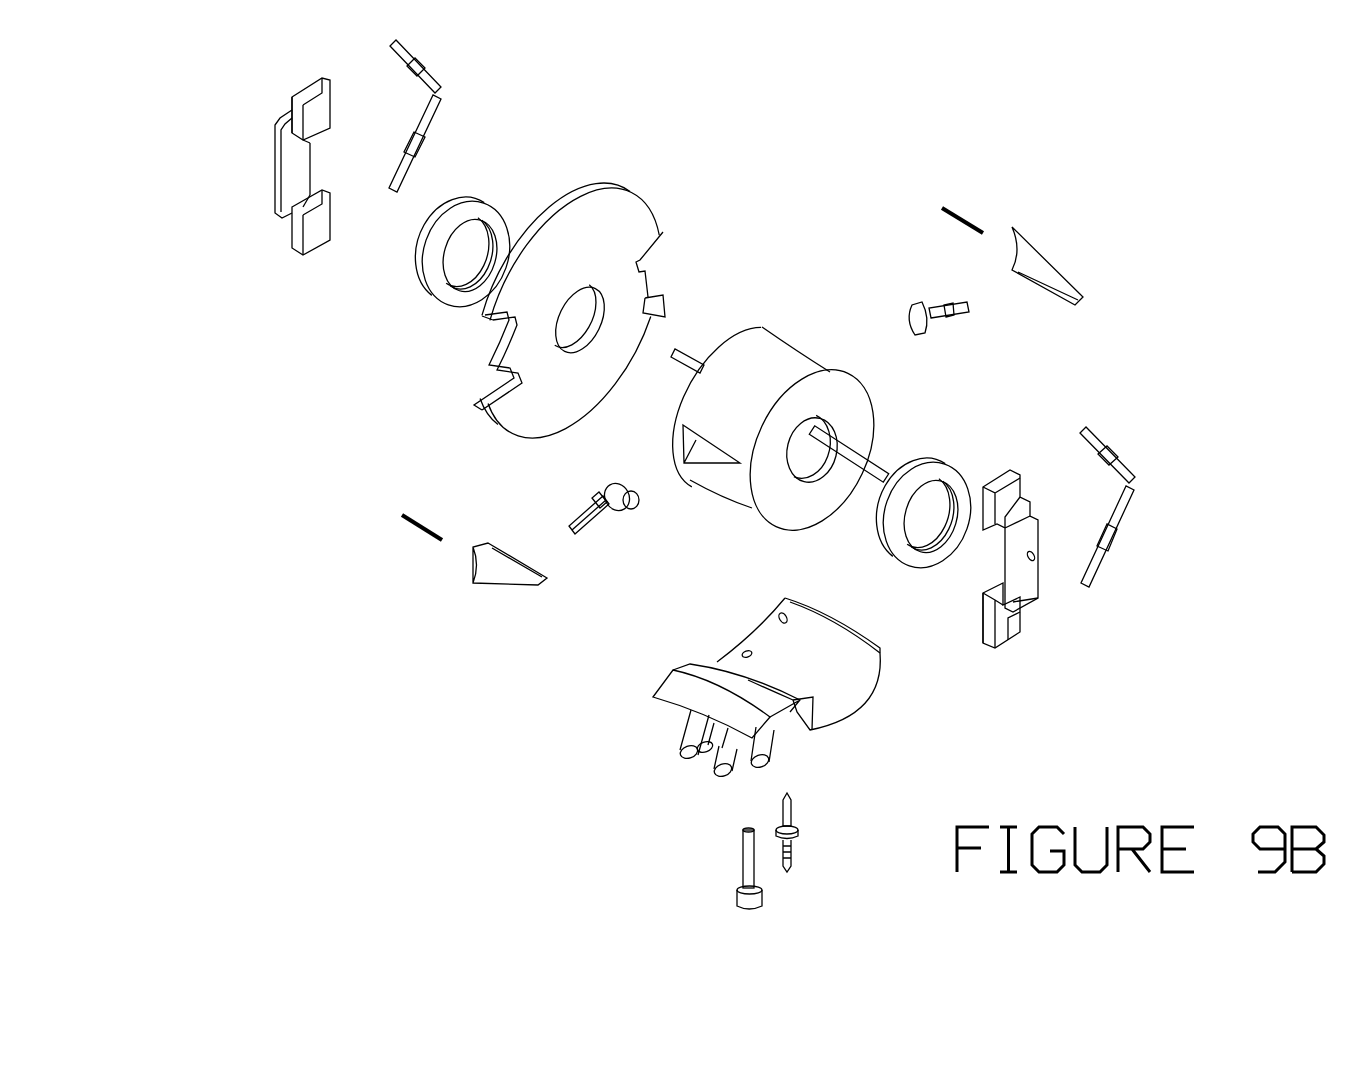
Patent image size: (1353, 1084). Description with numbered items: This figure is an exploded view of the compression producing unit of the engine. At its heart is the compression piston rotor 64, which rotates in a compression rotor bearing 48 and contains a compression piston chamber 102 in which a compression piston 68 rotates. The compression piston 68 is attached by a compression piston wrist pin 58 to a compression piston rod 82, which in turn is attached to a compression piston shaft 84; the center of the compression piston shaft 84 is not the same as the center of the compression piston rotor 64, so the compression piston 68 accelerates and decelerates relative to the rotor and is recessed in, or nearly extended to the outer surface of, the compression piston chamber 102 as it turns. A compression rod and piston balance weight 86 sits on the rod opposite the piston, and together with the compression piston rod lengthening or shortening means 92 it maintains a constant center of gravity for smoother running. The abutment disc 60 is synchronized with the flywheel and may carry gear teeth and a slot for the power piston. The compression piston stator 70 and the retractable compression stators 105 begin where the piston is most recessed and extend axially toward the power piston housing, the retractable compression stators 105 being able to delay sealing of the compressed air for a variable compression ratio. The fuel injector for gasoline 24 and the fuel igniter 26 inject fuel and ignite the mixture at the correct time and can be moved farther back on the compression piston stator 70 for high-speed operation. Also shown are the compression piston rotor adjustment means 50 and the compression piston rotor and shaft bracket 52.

The fuel injector for gasoline 24 is at (683, 867).
The fuel igniter 26 is at (846, 817).
The compression rotor bearing 48 is at (743, 382).
The compression piston rotor adjustment means 50 is at (817, 302).
The compression piston rotor & shaft bracket 52 is at (651, 373).
The compression piston wrist pin 58 is at (674, 371).
The abutment disc 60 is at (588, 297).
The compression piston rotor 64 is at (826, 410).
The compression piston 68 is at (763, 434).
The compression piston stator 70 is at (850, 664).
The compression piston rod 82 is at (718, 460).
The compression piston shaft 84 is at (907, 445).
The compression rod and piston balance weight 86 is at (763, 428).
The compression piston rod lengthening or shortening means 92 is at (721, 405).
The compression piston chamber 102 is at (712, 490).
The retractable compression stator 105 is at (699, 693).